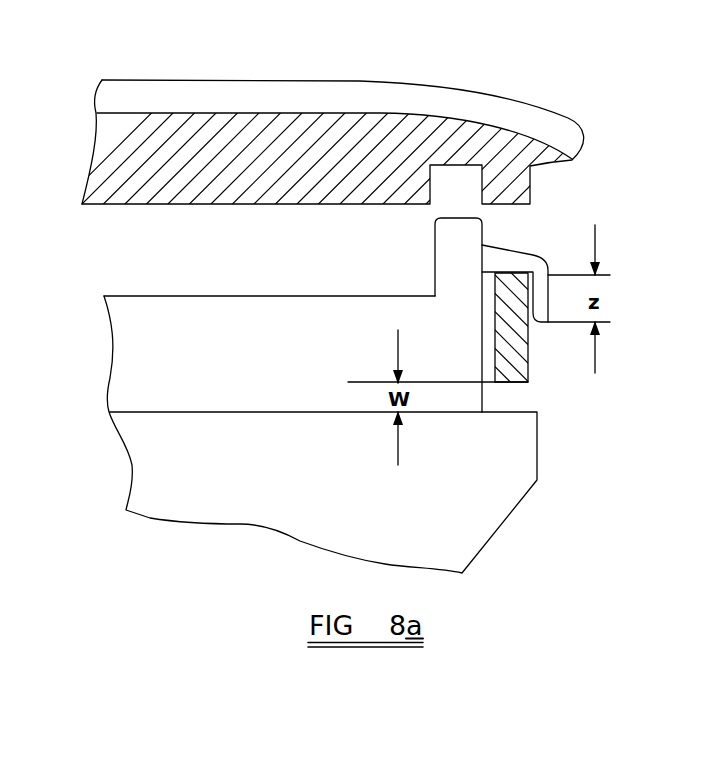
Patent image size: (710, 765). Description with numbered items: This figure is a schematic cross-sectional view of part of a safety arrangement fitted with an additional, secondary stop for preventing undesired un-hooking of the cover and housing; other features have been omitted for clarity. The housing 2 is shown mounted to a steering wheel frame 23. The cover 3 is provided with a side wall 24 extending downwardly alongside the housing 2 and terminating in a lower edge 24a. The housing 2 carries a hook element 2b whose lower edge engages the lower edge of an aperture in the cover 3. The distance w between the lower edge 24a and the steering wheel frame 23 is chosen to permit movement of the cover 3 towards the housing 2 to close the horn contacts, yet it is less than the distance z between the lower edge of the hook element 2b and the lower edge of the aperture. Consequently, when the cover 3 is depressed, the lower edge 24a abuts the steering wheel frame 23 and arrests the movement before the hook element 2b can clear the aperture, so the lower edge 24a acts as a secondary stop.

The cover 3 is at (547, 117).
The housing 2 is at (473, 233).
The hook element 2b is at (538, 257).
The side wall 24 is at (528, 345).
The lower edge 24a is at (528, 385).
The steering wheel frame 23 is at (480, 477).